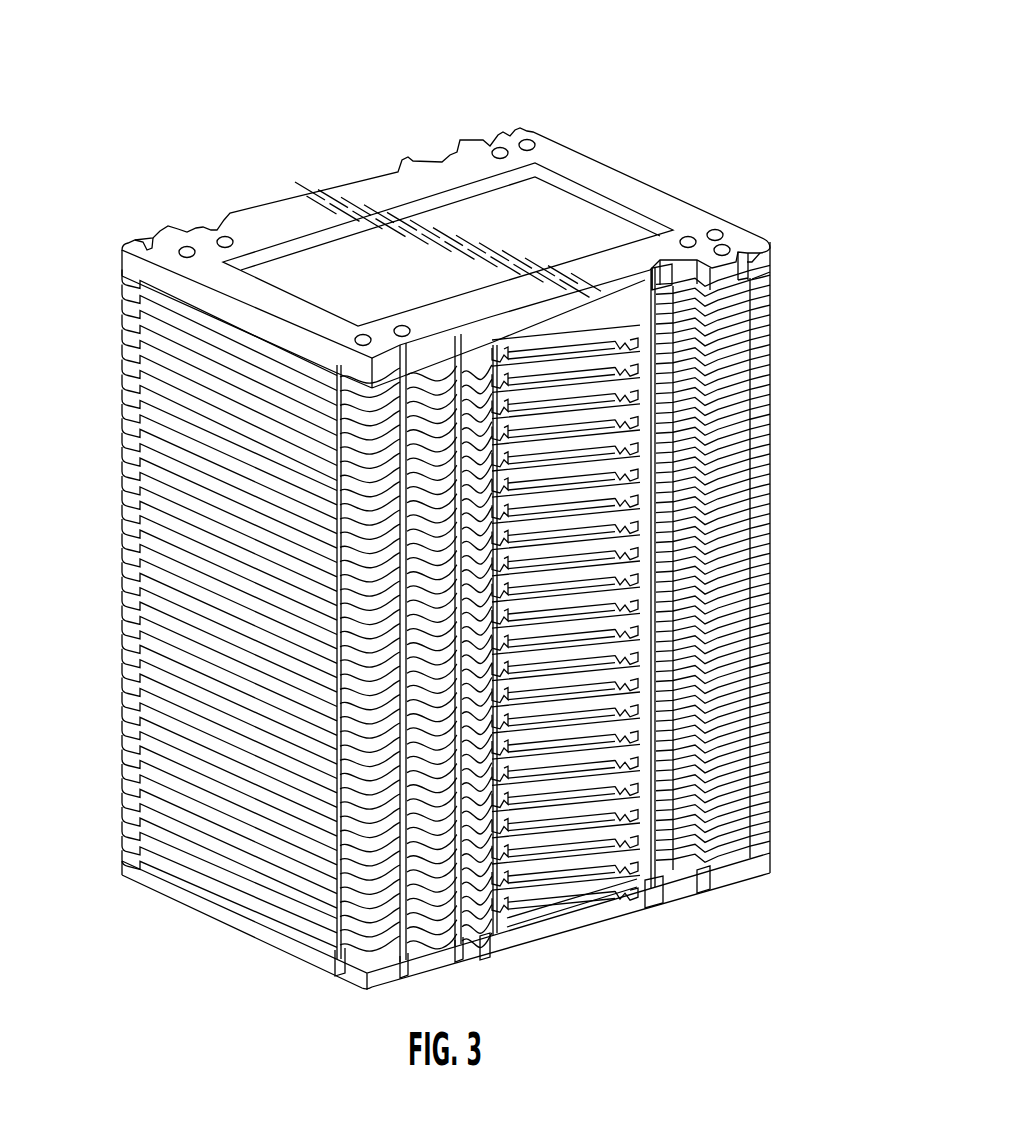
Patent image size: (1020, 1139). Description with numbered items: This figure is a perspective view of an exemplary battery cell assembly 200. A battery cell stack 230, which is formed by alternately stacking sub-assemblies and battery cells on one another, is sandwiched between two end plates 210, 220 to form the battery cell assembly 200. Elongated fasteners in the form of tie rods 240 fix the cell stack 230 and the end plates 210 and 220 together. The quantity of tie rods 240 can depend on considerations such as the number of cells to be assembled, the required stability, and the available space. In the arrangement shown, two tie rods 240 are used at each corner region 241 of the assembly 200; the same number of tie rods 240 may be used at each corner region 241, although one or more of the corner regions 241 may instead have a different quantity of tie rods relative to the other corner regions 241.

The battery cell assembly 200 is at (485, 499).
The end plate 210 is at (630, 166).
The end plate 220 is at (771, 874).
The battery cell stack 230 is at (783, 268).
The tie rods 240 is at (222, 236).
The corner region 241 is at (104, 257).